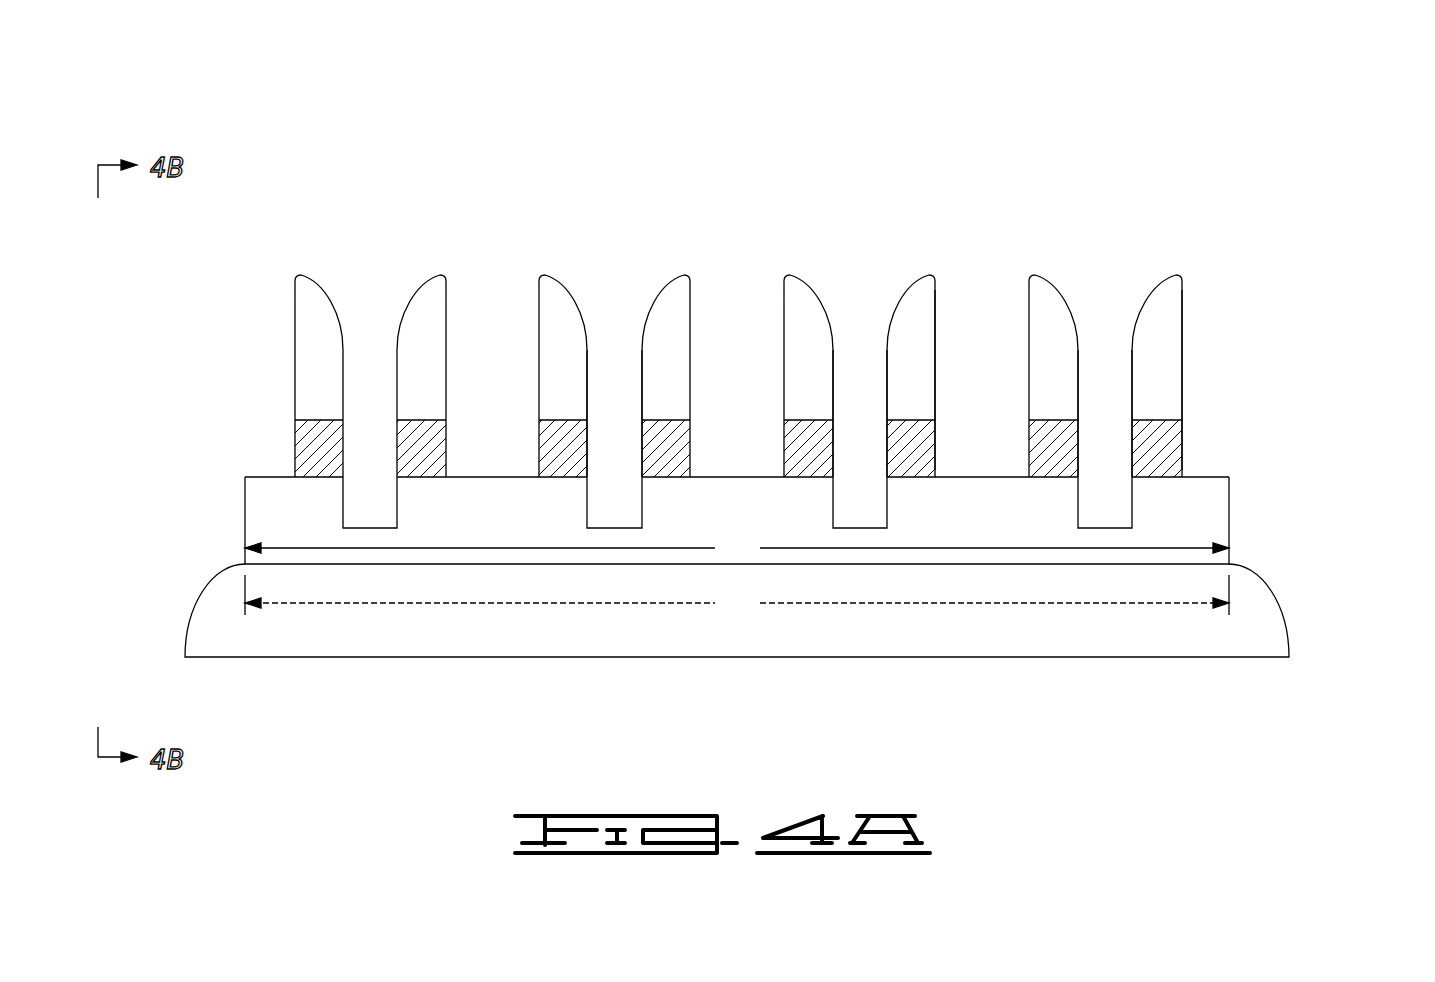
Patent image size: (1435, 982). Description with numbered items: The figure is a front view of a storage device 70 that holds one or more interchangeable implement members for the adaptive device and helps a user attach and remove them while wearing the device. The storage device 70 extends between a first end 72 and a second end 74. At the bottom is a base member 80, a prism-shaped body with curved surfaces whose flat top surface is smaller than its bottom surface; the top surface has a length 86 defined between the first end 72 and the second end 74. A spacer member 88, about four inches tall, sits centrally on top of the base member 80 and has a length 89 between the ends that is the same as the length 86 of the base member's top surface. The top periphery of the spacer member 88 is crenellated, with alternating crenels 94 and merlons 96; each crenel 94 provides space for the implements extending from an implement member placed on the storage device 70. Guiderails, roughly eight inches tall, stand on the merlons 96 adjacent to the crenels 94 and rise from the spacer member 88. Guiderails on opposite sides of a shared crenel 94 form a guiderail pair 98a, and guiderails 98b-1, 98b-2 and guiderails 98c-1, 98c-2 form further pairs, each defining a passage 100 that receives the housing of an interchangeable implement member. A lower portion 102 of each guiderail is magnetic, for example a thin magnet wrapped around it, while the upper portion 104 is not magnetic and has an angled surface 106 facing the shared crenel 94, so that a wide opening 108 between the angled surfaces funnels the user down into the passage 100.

The storage device 70 is at (1250, 125).
The first end 72 is at (152, 448).
The second end 74 is at (1300, 568).
The base member 80 is at (197, 613).
The length of the top surface of the base member 86 is at (737, 595).
The spacer member 88 is at (243, 530).
The length of the spacer member 89 is at (737, 548).
The crenel 94 is at (357, 493).
The merlon 96 is at (258, 468).
The guiderail pair 98a is at (445, 265).
The guiderail 98b-1 is at (543, 274).
The guiderail 98b-2 is at (684, 273).
The guiderail 98c-1 is at (793, 273).
The guiderail 98c-2 is at (927, 275).
The passage 100 is at (853, 310).
The lower portion 102 is at (1047, 432).
The upper portion 104 is at (940, 320).
The angled surface 106 is at (1053, 280).
The wide opening 108 is at (675, 265).